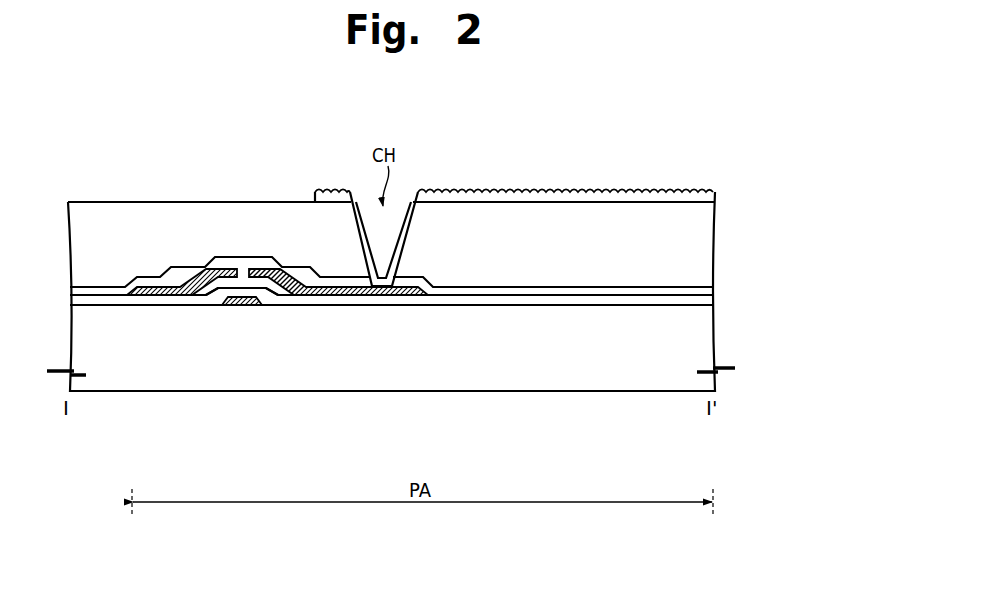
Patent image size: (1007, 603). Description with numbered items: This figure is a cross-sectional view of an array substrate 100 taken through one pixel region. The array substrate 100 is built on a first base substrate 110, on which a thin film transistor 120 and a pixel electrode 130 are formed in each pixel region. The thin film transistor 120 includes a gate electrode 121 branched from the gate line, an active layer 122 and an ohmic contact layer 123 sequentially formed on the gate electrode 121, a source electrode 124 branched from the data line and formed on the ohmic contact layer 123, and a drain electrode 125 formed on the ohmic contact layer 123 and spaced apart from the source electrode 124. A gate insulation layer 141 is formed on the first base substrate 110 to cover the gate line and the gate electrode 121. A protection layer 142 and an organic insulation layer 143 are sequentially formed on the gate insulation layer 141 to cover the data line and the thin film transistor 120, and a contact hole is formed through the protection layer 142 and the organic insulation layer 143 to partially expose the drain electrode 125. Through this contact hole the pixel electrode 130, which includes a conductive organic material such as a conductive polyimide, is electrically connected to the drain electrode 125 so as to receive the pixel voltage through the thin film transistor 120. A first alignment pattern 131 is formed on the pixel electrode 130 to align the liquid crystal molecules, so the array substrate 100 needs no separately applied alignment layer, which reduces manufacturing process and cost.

The array substrate 100 is at (708, 104).
The first base substrate 110 is at (707, 326).
The thin film transistor 120 is at (277, 367).
The gate electrode 121 is at (233, 300).
The active layer 122 is at (190, 297).
The ohmic contact layer 123 is at (280, 297).
The source electrode 124 is at (148, 297).
The drain electrode 125 is at (338, 349).
The pixel electrode 130 is at (485, 190).
The first alignment pattern 131 is at (589, 190).
The gate insulation layer 141 is at (707, 297).
The protection layer 142 is at (707, 288).
The organic insulation layer 143 is at (707, 242).